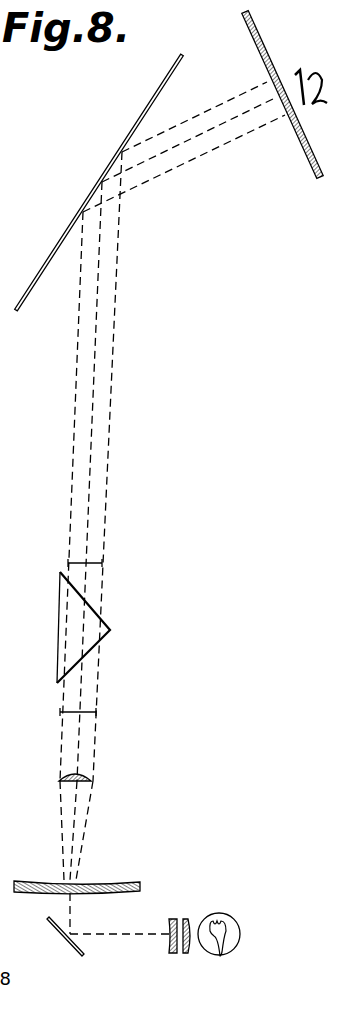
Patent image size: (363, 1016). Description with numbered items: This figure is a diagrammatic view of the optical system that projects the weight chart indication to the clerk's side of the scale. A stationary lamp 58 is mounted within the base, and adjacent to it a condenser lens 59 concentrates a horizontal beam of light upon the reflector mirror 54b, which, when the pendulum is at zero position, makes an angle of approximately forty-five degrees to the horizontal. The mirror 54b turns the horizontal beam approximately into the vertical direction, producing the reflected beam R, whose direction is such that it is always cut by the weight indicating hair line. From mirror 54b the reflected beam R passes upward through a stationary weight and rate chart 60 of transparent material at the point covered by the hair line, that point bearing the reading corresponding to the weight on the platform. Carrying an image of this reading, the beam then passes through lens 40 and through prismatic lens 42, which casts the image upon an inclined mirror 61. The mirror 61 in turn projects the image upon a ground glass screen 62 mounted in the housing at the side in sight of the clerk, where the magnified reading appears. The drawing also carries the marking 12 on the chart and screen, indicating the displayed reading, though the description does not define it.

The ground glass screen 62 is at (268, 52).
The mirror 61 is at (42, 272).
The reflected beam R is at (110, 407).
The prismatic lens 42 is at (112, 630).
The lens 40 is at (91, 780).
The weight and rate chart 60 is at (122, 885).
The mirror 54b is at (82, 955).
The condenser lens 59 is at (193, 920).
The lamp 58 is at (238, 930).
The scale graduation 12 is at (193, 476).